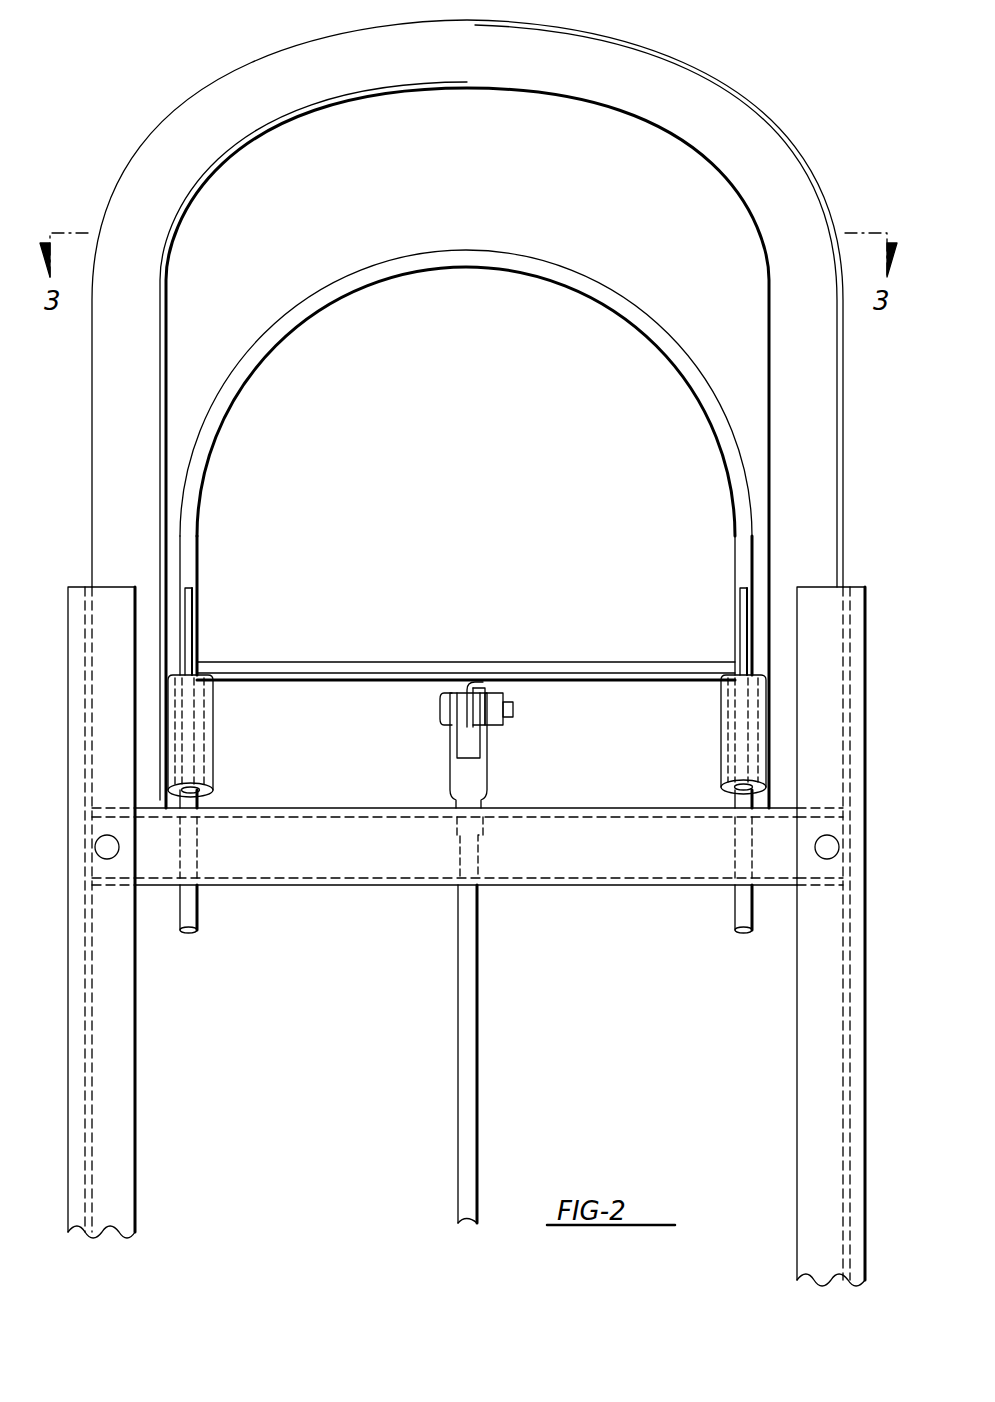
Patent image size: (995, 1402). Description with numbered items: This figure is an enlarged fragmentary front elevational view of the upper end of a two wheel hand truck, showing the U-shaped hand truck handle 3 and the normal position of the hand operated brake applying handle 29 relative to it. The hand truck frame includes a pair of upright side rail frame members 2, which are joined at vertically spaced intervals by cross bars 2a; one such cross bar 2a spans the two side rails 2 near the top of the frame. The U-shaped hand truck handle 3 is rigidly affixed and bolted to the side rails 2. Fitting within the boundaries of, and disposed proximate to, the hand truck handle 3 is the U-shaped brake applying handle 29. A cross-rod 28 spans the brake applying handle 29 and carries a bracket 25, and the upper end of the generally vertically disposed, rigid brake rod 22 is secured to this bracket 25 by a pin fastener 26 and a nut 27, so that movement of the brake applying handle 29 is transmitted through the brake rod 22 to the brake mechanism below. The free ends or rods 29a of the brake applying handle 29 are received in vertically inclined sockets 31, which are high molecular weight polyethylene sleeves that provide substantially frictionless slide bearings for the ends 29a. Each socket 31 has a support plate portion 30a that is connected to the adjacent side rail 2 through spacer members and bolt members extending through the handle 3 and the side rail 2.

The upright side rail frame member 2 is at (122, 1065).
The cross bar 2a is at (548, 872).
The U-shaped hand truck handle 3 is at (150, 168).
The brake rod 22 is at (462, 1030).
The bracket 25 is at (485, 682).
The pin fastener 26 is at (440, 715).
The nut 27 is at (495, 730).
The cross-rod 28 is at (368, 668).
The U-shaped brake applying handle 29 is at (258, 350).
The free end rod 29a is at (200, 910).
The support plate portion 30a is at (190, 610).
The socket 31 is at (215, 753).